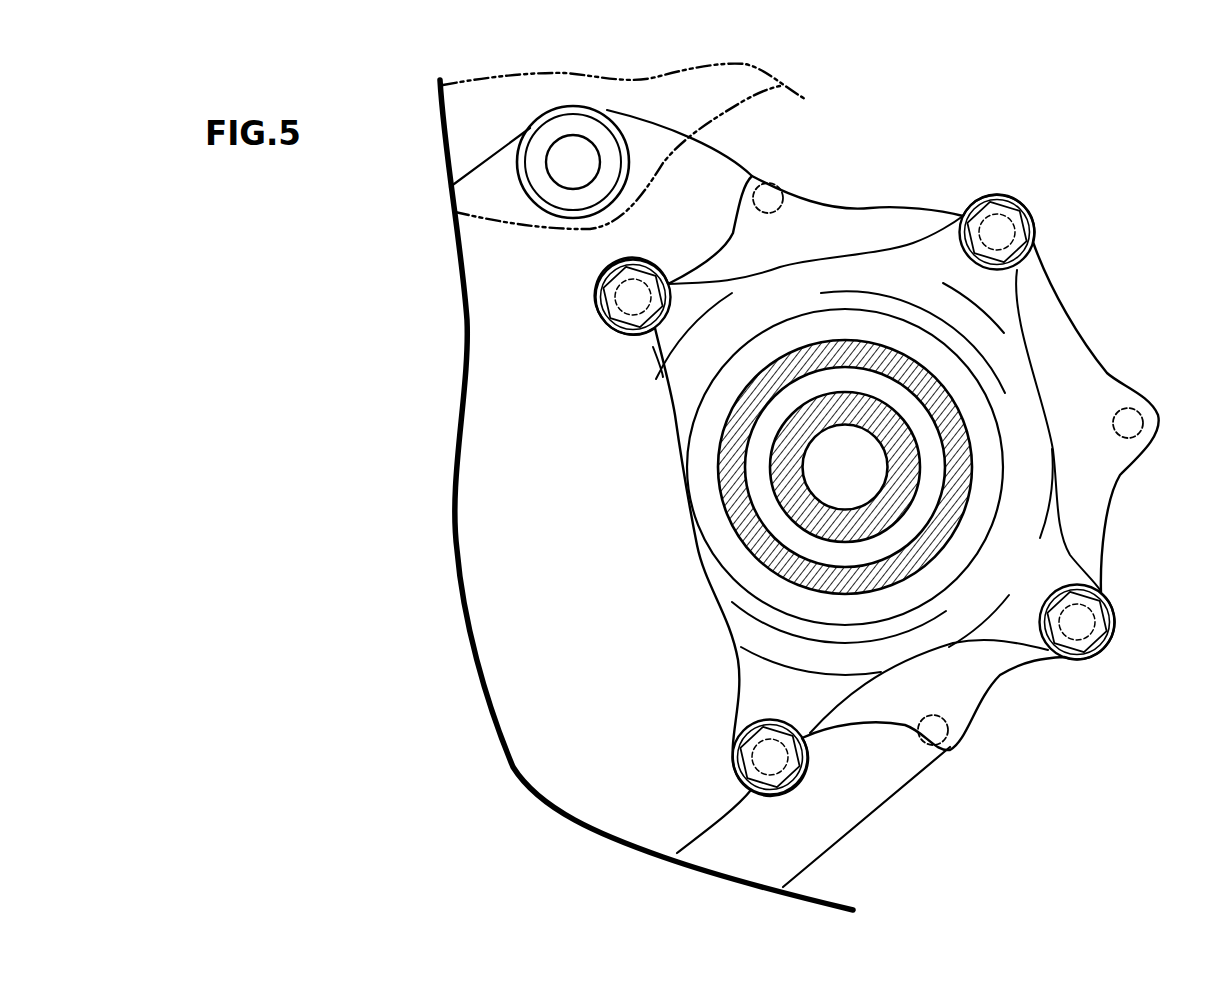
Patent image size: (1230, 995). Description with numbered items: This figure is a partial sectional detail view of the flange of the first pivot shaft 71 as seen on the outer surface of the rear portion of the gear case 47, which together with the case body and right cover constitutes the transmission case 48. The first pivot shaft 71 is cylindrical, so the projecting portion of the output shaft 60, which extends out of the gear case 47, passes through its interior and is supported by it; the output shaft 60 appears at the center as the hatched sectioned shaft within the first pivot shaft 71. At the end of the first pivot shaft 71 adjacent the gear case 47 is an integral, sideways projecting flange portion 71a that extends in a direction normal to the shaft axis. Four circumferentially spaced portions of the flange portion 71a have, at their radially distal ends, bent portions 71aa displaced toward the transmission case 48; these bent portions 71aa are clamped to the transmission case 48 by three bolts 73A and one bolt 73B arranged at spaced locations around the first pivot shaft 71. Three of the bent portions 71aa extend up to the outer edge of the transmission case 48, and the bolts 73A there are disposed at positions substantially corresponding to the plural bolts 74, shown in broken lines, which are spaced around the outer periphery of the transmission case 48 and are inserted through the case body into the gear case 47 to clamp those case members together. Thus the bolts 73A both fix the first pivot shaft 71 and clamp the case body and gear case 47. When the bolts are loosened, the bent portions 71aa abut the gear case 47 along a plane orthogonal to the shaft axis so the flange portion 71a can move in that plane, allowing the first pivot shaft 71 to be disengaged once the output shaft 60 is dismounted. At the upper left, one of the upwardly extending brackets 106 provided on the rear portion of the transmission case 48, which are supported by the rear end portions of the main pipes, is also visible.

The gear case 47 is at (505, 557).
The transmission case 48 is at (885, 200).
The output shaft 60 is at (770, 477).
The first pivot shaft 71 is at (937, 383).
The flange portion 71a is at (1013, 447).
The bent portions 71aa is at (993, 287).
The bolts 73A is at (997, 232).
The bolt 73B is at (630, 300).
The bolts 74 is at (783, 195).
The brackets 106 is at (564, 126).